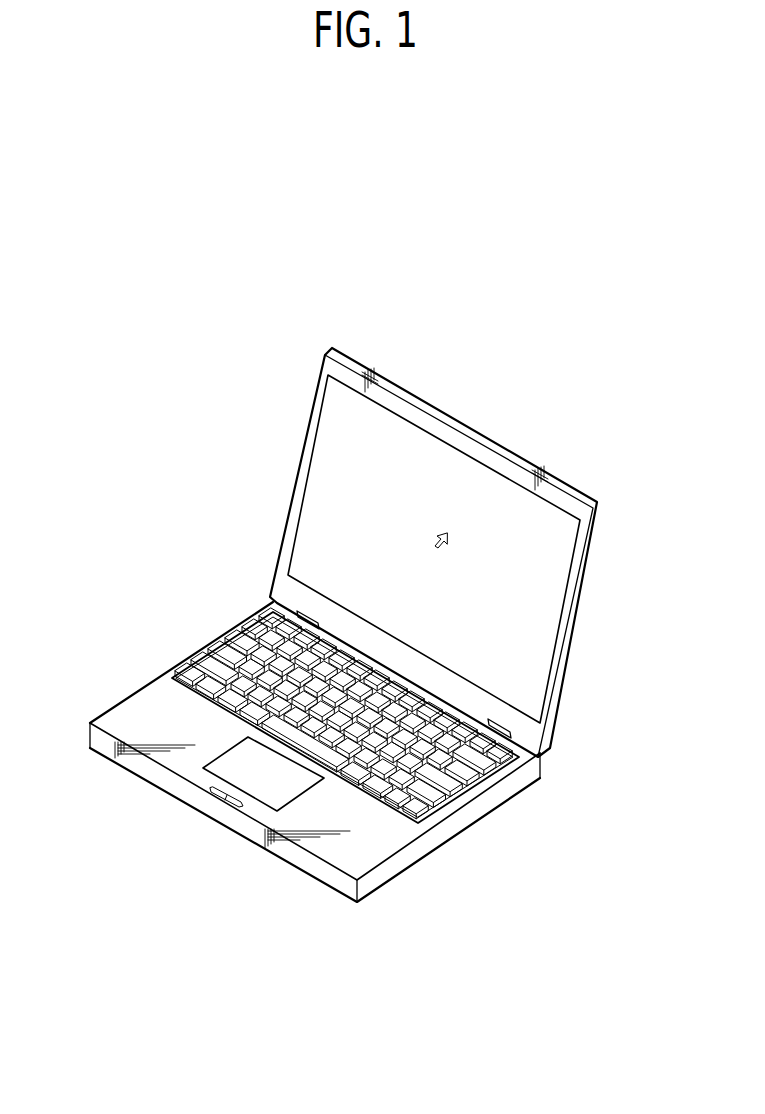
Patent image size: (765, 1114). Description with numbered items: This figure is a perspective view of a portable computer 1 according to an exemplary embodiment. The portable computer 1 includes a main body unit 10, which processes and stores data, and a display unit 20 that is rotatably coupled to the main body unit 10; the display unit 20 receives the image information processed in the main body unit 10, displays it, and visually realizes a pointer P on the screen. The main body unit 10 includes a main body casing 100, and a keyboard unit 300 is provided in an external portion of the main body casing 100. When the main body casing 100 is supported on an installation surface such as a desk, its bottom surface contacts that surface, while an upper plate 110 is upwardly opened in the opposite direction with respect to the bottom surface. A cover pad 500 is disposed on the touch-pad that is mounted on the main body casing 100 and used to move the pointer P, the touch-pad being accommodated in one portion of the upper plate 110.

The portable computer 1 is at (90, 462).
The main body unit 10 is at (155, 652).
The display unit 20 is at (275, 450).
The main body casing 100 is at (145, 768).
The upper plate 110 is at (337, 852).
The keyboard unit 300 is at (465, 780).
The cover pad 500 is at (273, 795).
The pointer P is at (448, 538).